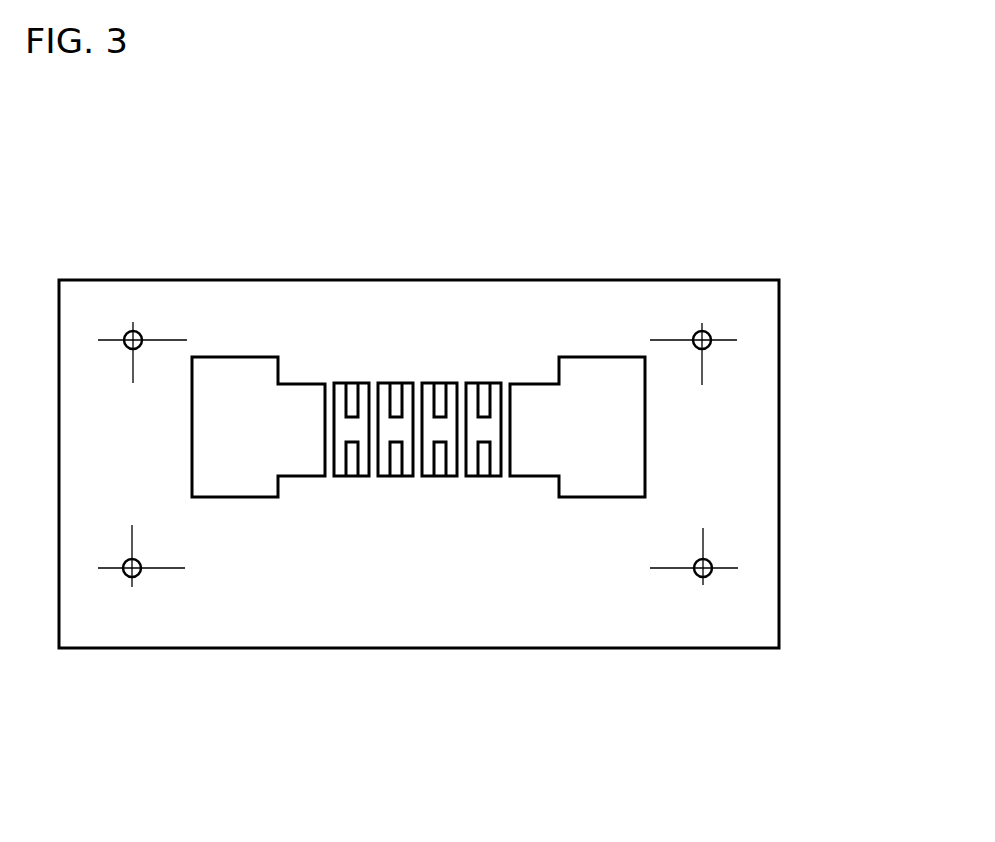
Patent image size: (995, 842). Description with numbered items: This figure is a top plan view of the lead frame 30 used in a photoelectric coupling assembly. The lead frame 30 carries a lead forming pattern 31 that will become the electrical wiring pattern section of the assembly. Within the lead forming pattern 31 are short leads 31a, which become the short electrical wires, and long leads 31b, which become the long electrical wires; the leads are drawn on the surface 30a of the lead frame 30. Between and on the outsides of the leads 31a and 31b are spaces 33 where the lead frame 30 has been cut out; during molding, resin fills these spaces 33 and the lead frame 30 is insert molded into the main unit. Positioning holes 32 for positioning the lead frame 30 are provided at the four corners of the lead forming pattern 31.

The lead frame 30 is at (419, 379).
The surface of the lead frame 30a is at (565, 308).
The lead forming pattern 31 is at (425, 297).
The short leads 31a is at (353, 383).
The long leads 31b is at (332, 383).
The positioning holes 32 is at (135, 331).
The spaces 33 is at (307, 400).